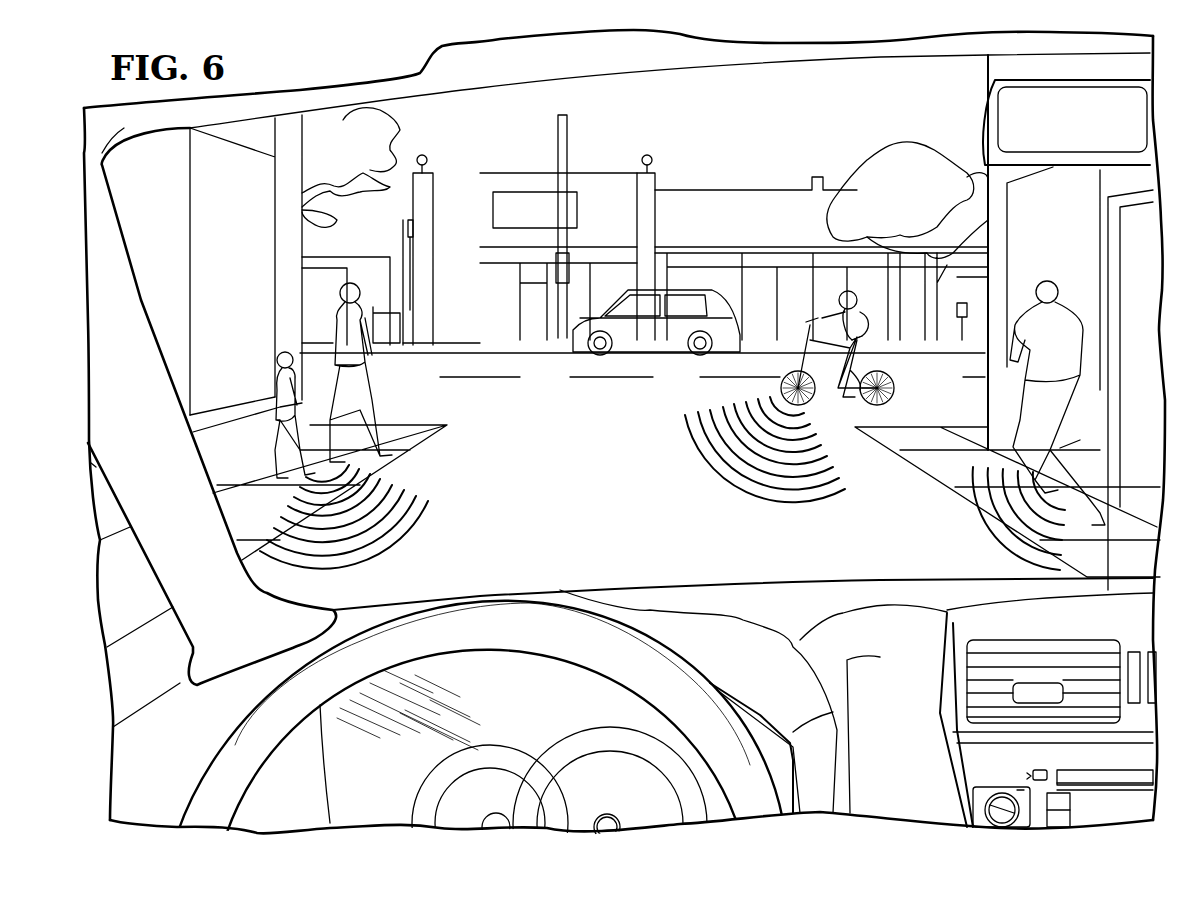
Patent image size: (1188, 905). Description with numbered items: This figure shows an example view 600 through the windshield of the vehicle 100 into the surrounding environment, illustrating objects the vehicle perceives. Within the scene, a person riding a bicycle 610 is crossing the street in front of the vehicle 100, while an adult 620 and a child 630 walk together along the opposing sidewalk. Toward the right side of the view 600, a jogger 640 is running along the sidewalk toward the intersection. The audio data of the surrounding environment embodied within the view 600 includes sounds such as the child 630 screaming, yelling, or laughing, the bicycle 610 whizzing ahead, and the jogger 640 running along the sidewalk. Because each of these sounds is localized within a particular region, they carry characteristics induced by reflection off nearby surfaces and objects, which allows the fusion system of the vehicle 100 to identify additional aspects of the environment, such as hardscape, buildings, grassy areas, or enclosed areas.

The vehicle 100 is at (893, 760).
The view 600 is at (400, 76).
The bicycle 610 is at (897, 387).
The adult 620 is at (367, 283).
The child 630 is at (280, 350).
The jogger 640 is at (1053, 275).